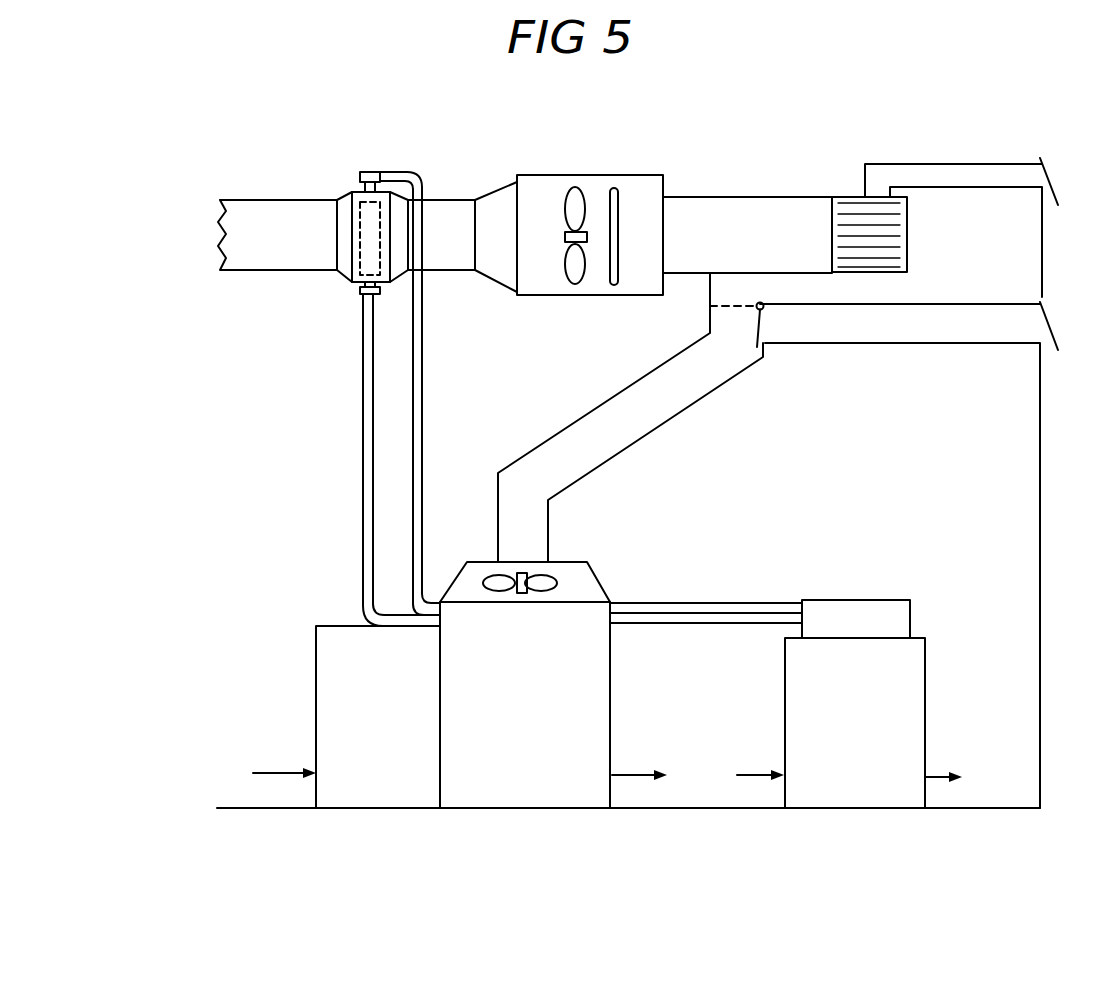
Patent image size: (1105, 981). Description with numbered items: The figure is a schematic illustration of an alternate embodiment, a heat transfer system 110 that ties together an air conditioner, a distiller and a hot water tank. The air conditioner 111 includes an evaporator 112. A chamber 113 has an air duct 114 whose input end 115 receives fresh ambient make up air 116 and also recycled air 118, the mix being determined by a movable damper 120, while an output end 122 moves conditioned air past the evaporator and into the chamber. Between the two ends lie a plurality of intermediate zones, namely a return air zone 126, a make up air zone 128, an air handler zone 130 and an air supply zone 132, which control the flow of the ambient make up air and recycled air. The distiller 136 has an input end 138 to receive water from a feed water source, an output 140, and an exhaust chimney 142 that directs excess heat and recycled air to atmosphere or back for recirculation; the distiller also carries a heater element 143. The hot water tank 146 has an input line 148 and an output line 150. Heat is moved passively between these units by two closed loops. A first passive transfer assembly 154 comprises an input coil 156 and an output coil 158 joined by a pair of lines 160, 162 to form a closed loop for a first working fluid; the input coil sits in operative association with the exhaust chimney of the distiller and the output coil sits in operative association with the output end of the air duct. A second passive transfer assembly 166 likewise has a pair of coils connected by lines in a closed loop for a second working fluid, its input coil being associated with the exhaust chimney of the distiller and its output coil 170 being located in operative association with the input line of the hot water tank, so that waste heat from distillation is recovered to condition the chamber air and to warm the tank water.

The heat transfer system 110 is at (243, 76).
The air conditioner 111 is at (590, 189).
The evaporator 112 is at (577, 283).
The chamber 113 is at (251, 196).
The air duct 114 is at (300, 153).
The input end 115 is at (761, 155).
The fresh ambient make up air 116 is at (909, 452).
The recycled air 118 is at (630, 417).
The movable damper 120 is at (788, 362).
The output end 122 is at (290, 313).
The return air zone 126 is at (747, 196).
The make up air zone 128 is at (825, 254).
The air handler zone 130 is at (453, 276).
The air supply zone 132 is at (494, 170).
The distiller 136 is at (394, 748).
The input end 138 is at (257, 726).
The output 140 is at (666, 821).
The exhaust chimney 142 is at (555, 546).
The heater element 143 is at (537, 737).
The hot water tank 146 is at (855, 758).
The input line 148 is at (791, 824).
The output line 150 is at (980, 825).
The first passive transfer assembly 154 is at (383, 399).
The input coil 156 is at (394, 193).
The output coil 158 is at (370, 233).
The line 160 is at (353, 460).
The line 162 is at (445, 393).
The second passive transfer assembly 166 is at (706, 580).
The output coil 170 is at (856, 567).